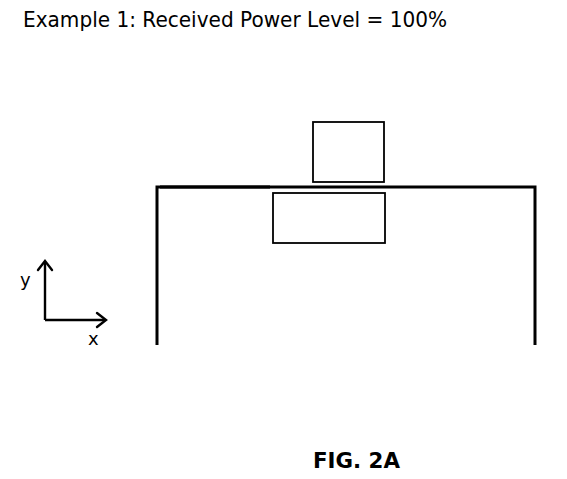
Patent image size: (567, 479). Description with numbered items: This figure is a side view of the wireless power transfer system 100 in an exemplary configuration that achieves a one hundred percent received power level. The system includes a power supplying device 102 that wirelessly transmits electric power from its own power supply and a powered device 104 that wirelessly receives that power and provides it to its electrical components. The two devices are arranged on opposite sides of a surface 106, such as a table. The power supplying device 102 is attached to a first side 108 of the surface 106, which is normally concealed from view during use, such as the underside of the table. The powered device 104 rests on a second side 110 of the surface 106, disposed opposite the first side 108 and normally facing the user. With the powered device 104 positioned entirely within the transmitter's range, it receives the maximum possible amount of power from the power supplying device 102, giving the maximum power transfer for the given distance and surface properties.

The wireless power transfer system 100 is at (277, 125).
The power supplying device 102 is at (347, 244).
The powered device 104 is at (368, 121).
The surface 106 is at (457, 190).
The first side 108 is at (247, 197).
The second side 110 is at (193, 178).